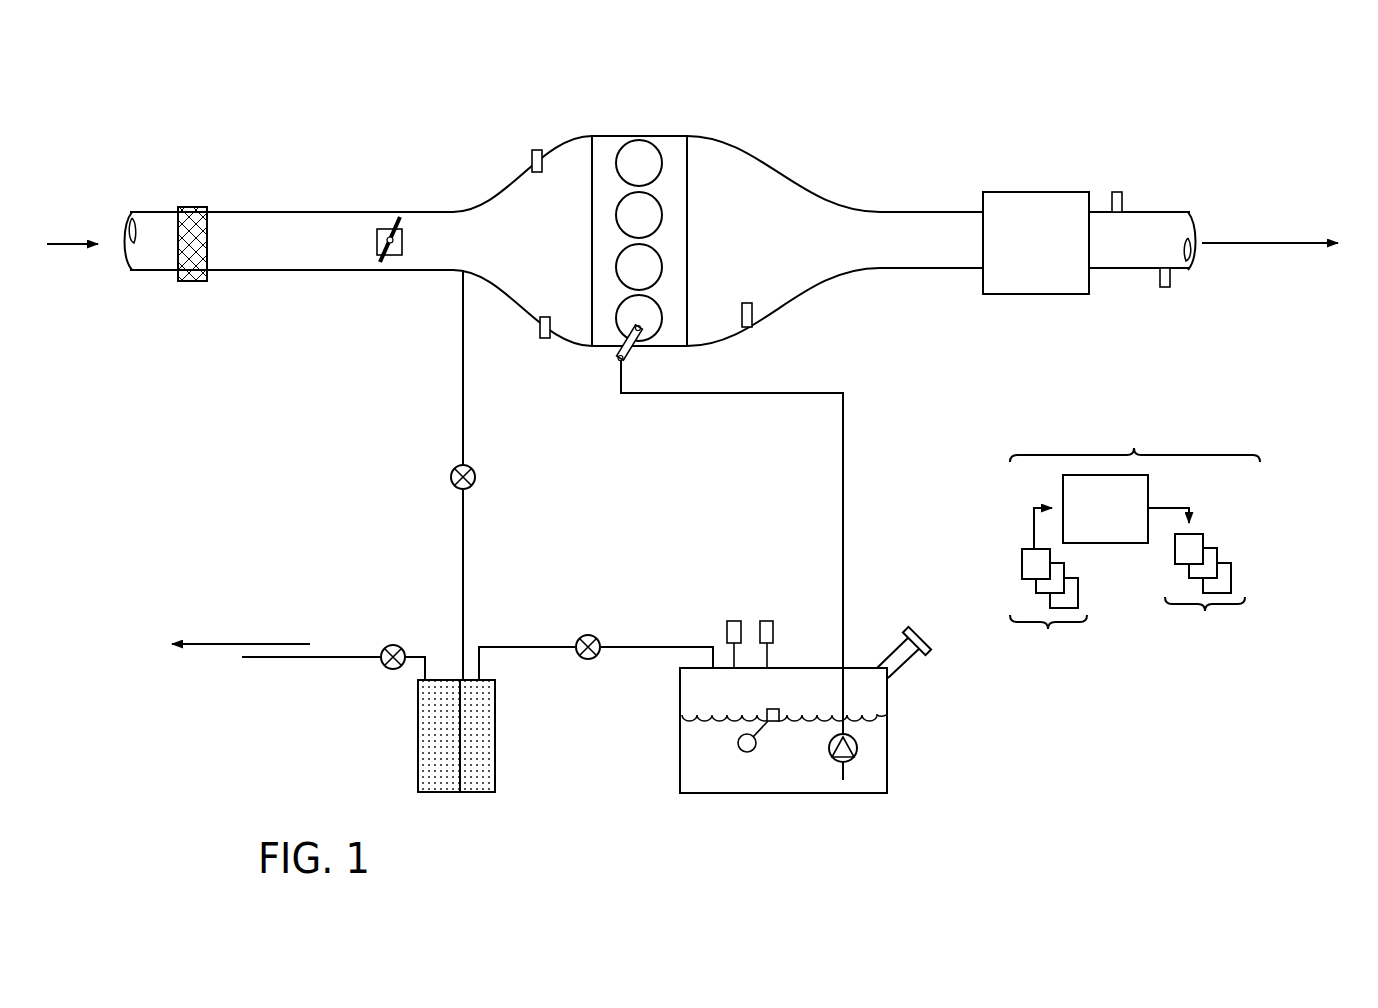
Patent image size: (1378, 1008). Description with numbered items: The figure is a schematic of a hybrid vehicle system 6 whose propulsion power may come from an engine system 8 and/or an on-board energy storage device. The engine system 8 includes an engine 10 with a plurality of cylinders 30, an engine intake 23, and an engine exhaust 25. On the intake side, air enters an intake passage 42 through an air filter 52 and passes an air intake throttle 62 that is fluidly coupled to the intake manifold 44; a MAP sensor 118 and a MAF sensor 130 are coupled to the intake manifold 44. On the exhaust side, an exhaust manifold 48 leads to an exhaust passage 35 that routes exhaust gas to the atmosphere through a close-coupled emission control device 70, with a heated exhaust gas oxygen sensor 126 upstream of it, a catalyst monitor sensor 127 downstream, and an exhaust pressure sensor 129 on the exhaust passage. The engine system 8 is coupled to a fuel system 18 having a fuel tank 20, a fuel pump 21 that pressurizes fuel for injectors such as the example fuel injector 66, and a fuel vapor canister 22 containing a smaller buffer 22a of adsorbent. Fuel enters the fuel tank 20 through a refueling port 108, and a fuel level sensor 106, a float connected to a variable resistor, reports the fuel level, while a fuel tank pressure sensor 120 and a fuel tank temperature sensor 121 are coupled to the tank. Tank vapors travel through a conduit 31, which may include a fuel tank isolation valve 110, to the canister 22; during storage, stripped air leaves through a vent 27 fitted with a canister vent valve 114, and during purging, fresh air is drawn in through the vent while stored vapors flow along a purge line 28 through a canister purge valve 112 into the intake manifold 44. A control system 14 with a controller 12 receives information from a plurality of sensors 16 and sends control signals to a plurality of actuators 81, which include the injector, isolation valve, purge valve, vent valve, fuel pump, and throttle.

The hybrid vehicle system 6 is at (143, 114).
The engine system 8 is at (1222, 110).
The engine 10 is at (687, 223).
The controller 12 is at (1105, 509).
The control system 14 is at (1135, 431).
The sensors 16 is at (1048, 588).
The fuel system 18 is at (932, 820).
The fuel tank 20 is at (680, 790).
The fuel pump 21 is at (857, 752).
The fuel vapor canister 22 is at (430, 793).
The buffer 22a is at (478, 793).
The engine intake 23 is at (480, 146).
The engine exhaust 25 is at (800, 170).
The vent 27 is at (370, 658).
The purge line 28 is at (463, 436).
The cylinders 30 is at (659, 160).
The conduit 31 is at (640, 647).
The exhaust passage 35 is at (1168, 212).
The intake passage 42 is at (158, 270).
The intake manifold 44 is at (554, 253).
The exhaust manifold 48 is at (764, 253).
The air filter 52 is at (194, 207).
The air intake throttle 62 is at (402, 248).
The fuel injector 66 is at (645, 352).
The emission control device 70 is at (1022, 192).
The actuators 81 is at (1196, 580).
The fuel level sensor 106 is at (780, 708).
The refueling port 108 is at (930, 640).
The fuel tank isolation valve 110 is at (580, 639).
The canister purge valve 112 is at (472, 470).
The canister vent valve 114 is at (399, 646).
The MAP sensor 118 is at (540, 323).
The fuel tank pressure sensor 120 is at (773, 630).
The fuel tank temperature sensor 121 is at (728, 621).
The heated exhaust gas oxygen sensor 126 is at (752, 305).
The catalyst monitor sensor 127 is at (1166, 288).
The exhaust pressure sensor 129 is at (1122, 196).
The MAF sensor 130 is at (536, 150).